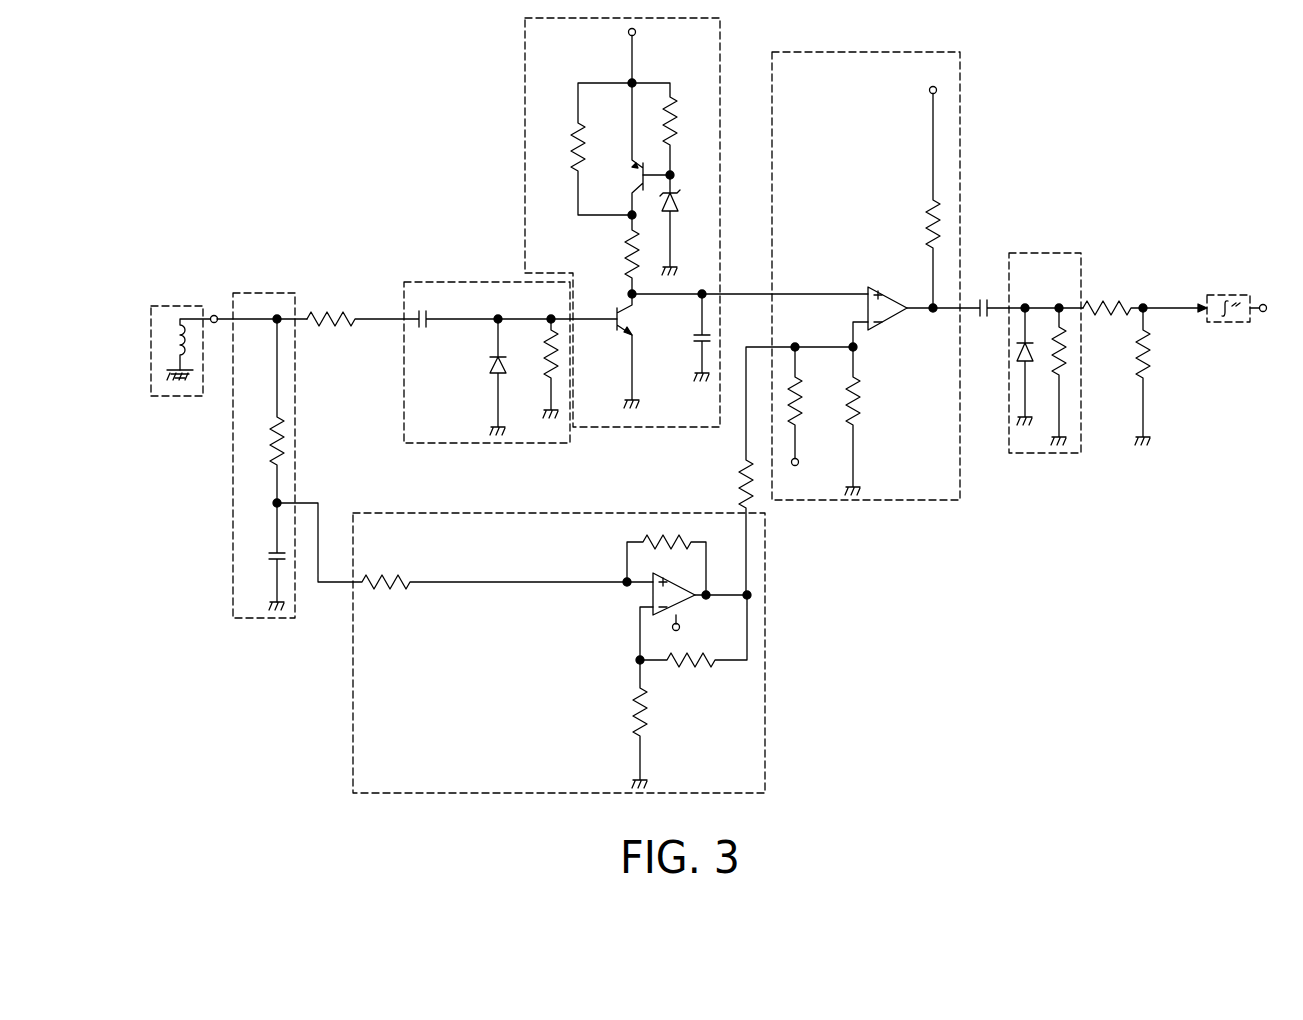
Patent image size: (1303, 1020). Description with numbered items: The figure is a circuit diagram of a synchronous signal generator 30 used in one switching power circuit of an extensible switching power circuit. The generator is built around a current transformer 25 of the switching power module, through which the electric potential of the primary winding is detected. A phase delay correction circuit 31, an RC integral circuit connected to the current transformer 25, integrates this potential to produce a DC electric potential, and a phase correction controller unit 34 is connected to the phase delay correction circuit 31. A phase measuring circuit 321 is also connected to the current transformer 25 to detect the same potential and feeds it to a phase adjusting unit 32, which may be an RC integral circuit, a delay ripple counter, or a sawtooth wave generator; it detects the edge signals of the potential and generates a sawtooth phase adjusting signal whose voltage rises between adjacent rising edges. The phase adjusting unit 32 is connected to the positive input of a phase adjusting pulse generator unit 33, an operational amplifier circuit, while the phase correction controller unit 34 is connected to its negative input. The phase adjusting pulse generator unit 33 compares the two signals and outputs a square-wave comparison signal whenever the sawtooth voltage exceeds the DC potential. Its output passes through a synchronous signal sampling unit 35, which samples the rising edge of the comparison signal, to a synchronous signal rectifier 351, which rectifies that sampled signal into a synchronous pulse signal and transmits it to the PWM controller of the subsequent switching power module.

The current transformer 25 is at (151, 318).
The synchronous signal generator 30 is at (1113, 153).
The phase delay correction circuit 31 is at (276, 293).
The phase adjusting unit 32 is at (720, 52).
The phase measuring circuit 321 is at (469, 282).
The phase adjusting pulse generator unit 33 is at (960, 92).
The phase correction controller unit 34 is at (765, 678).
The synchronous signal sampling unit 35 is at (1040, 253).
The synchronous signal rectifier 351 is at (1221, 294).